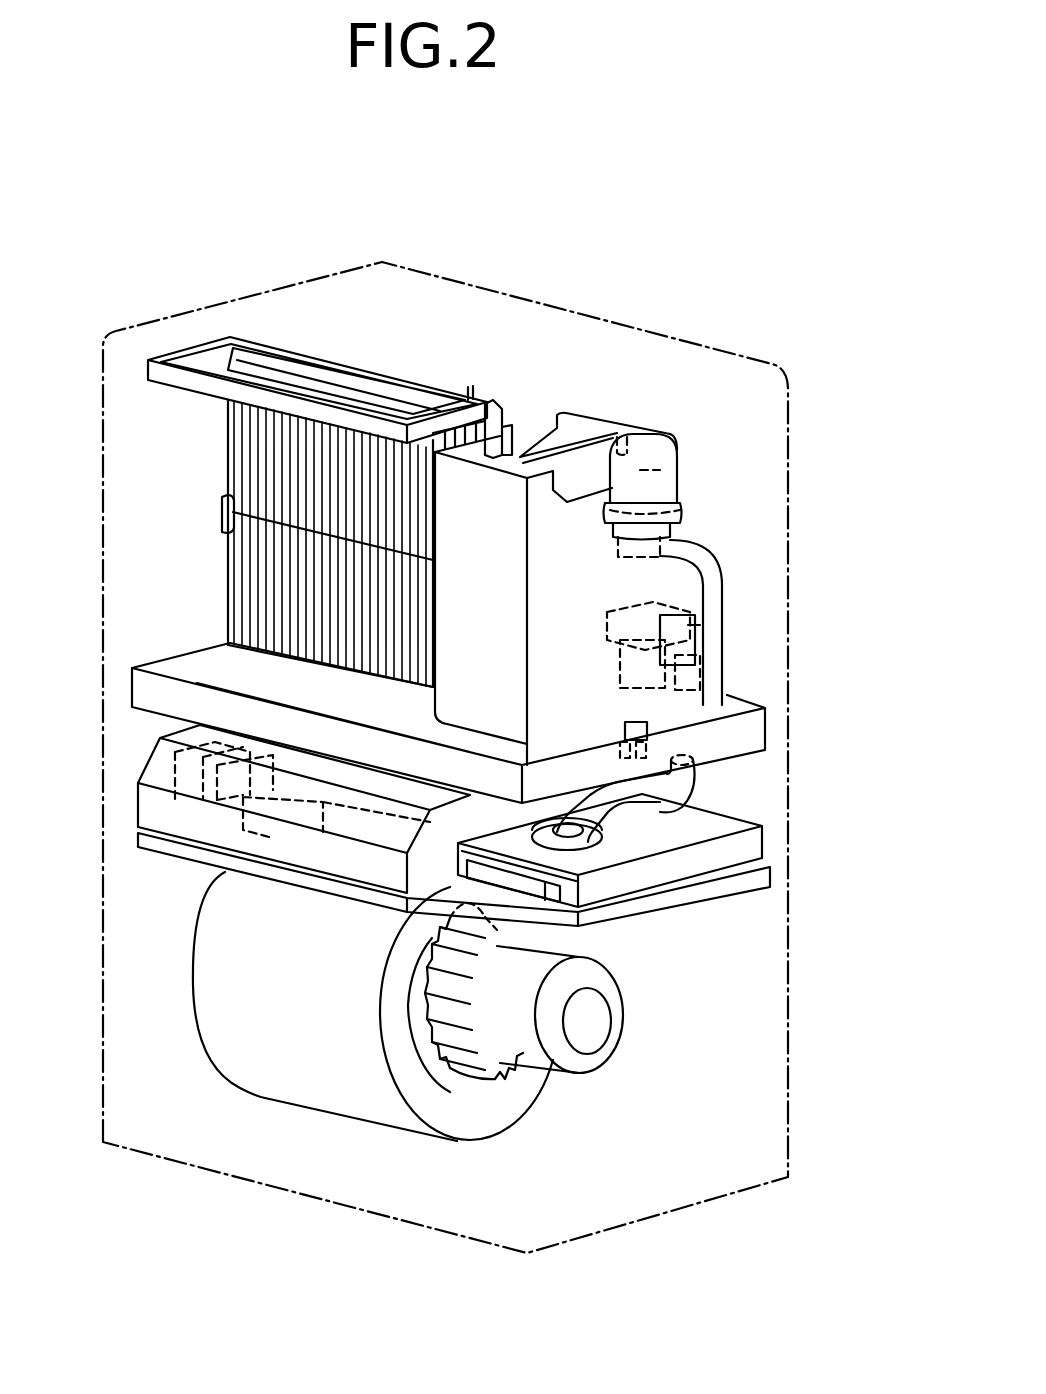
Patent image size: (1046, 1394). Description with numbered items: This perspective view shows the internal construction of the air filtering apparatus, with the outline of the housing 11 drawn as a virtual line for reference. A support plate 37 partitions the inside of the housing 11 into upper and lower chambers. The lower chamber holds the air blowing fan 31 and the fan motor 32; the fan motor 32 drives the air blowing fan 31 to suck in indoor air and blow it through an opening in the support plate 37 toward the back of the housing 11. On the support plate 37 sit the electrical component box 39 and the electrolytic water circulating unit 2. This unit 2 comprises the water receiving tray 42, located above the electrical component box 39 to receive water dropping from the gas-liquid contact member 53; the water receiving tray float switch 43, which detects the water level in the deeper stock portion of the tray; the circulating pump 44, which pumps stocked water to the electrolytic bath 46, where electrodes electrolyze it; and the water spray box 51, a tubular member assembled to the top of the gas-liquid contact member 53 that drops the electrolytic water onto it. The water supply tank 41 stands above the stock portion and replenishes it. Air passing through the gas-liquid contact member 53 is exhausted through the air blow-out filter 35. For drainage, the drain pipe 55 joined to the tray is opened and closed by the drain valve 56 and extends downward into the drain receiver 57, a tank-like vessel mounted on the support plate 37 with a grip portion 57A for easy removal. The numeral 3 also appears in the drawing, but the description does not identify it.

The electrolytic water circulating unit 2 is at (733, 423).
The indoor unit 3 is at (382, 286).
The housing 11 is at (728, 348).
The air blowing fan 31 is at (520, 1093).
The fan motor 32 is at (593, 1032).
The air blow-out filter 35 is at (183, 350).
The support plate 37 is at (177, 850).
The electrical component box 39 is at (155, 817).
The water supply tank 41 is at (585, 412).
The water receiving tray 42 is at (765, 715).
The water receiving tray float switch 43 is at (705, 757).
The circulating pump 44 is at (700, 672).
The electrolytic bath 46 is at (690, 472).
The water spray box 51 is at (495, 403).
The gas-liquid contact member 53 is at (228, 470).
The drain pipe 55 is at (683, 789).
The drain valve 56 is at (650, 788).
The drain receiver 57 is at (740, 857).
The grip portion 57A is at (535, 893).